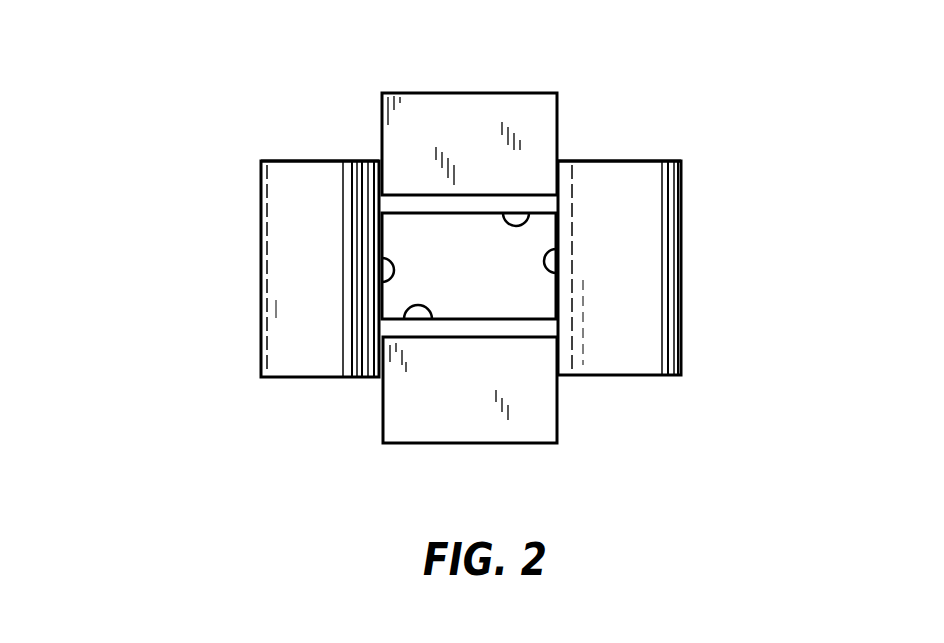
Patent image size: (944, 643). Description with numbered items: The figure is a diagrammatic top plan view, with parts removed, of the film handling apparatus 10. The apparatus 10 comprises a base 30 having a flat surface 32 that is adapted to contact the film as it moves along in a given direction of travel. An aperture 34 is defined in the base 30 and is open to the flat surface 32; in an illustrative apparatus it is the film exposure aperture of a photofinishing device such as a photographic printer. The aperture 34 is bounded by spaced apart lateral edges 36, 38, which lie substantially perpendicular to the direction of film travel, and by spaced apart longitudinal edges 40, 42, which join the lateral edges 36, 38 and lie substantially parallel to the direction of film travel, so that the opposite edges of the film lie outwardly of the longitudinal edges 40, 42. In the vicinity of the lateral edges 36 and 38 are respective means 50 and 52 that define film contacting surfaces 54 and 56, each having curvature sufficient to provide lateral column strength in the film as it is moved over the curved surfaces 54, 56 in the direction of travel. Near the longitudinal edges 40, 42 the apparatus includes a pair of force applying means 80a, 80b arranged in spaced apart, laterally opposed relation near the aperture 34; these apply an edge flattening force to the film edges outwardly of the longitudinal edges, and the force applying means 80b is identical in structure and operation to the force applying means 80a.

The apparatus 10 is at (208, 131).
The base 30 is at (303, 378).
The flat surface 32 is at (565, 355).
The aperture 34 is at (490, 279).
The lateral edge 36 is at (383, 262).
The lateral edge 38 is at (560, 273).
The longitudinal edge 40 is at (406, 320).
The longitudinal edge 42 is at (528, 213).
The means for defining film contacting surface 50 is at (313, 160).
The means for defining film contacting surface 52 is at (623, 158).
The film contacting surface 54 is at (322, 203).
The film contacting surface 56 is at (633, 212).
The force applying means 80a is at (477, 107).
The force applying means 80b is at (465, 410).